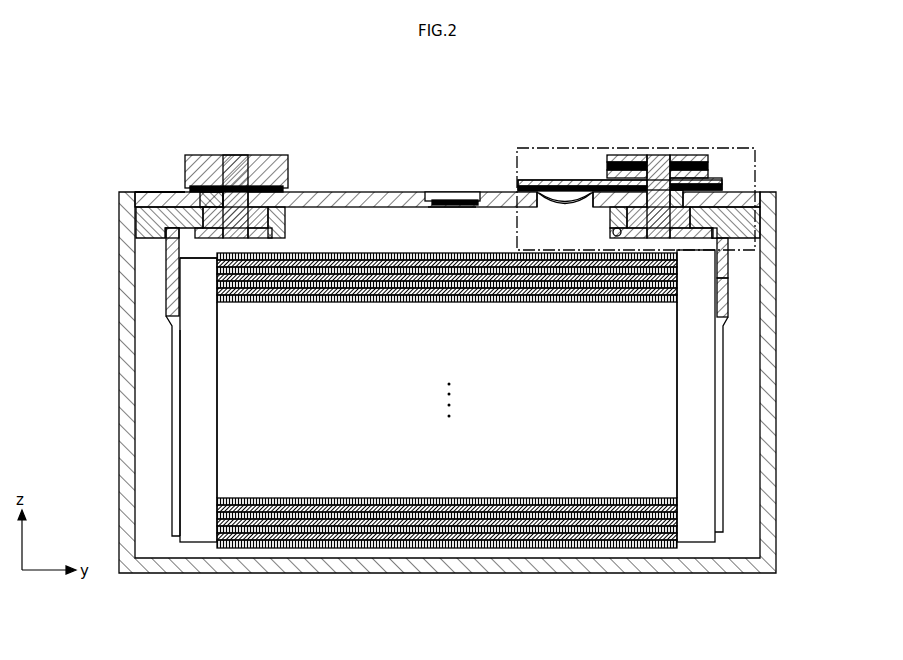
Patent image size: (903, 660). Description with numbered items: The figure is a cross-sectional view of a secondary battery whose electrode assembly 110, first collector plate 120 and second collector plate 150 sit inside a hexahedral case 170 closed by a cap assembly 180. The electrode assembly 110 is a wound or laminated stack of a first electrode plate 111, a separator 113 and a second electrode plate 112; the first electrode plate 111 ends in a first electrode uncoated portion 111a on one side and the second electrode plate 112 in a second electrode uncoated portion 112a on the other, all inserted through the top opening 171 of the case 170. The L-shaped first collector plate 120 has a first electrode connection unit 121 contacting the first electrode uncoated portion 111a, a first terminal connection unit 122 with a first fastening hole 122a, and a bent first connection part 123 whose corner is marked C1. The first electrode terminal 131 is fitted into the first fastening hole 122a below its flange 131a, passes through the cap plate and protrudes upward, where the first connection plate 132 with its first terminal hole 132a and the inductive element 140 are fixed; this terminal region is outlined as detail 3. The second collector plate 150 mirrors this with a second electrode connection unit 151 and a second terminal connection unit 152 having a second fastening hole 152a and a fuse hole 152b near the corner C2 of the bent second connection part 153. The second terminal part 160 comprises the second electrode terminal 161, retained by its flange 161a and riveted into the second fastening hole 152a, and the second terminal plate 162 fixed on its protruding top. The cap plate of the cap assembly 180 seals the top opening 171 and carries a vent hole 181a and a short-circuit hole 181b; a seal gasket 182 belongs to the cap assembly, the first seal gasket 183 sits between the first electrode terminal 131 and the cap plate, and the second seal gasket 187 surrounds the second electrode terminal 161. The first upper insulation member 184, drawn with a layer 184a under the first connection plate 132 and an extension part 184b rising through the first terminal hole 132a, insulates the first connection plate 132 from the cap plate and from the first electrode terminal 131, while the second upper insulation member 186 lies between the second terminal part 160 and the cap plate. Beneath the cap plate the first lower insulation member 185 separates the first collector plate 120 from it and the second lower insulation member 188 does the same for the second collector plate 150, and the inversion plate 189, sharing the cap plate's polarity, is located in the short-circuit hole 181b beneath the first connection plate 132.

The terminal region detail 3 is at (517, 150).
The electrode assembly 110 is at (449, 439).
The first electrode plate 111 is at (408, 550).
The first electrode uncoated portion 111a is at (697, 545).
The second electrode plate 112 is at (538, 550).
The second electrode uncoated portion 112a is at (198, 545).
The separator 113 is at (465, 550).
The first collector plate 120 is at (707, 354).
The first electrode connection unit 121 is at (724, 433).
The first terminal connection unit 122 is at (700, 197).
The first fastening hole 122a is at (718, 262).
The first connection part 123 is at (728, 298).
The first electrode terminal 131 is at (660, 175).
The flange 131a is at (614, 234).
The first connection plate 132 is at (528, 183).
The first terminal hole 132a is at (650, 178).
The inductive element 140 is at (670, 168).
The second collector plate 150 is at (157, 339).
The second electrode connection unit 151 is at (178, 433).
The second terminal connection unit 152 is at (172, 230).
The second fastening hole 152a is at (214, 263).
The fuse hole 152b is at (165, 193).
The second connection part 153 is at (170, 305).
The second terminal part 160 is at (270, 162).
The second electrode terminal 161 is at (238, 165).
The flange 161a is at (272, 222).
The second terminal plate 162 is at (206, 165).
The case 170 is at (780, 497).
The top opening 171 is at (138, 193).
The cap assembly 180 is at (333, 178).
The vent hole 181a is at (442, 208).
The short-circuit hole 181b is at (544, 208).
The seal gasket 182 is at (464, 195).
The first seal gasket 183 is at (687, 198).
The first upper insulation member 184 is at (722, 190).
The first insulating layer 184a is at (573, 187).
The extension part 184b is at (700, 182).
The first lower insulation member 185 is at (730, 216).
The second upper insulation member 186 is at (200, 187).
The second seal gasket 187 is at (210, 198).
The second lower insulation member 188 is at (145, 214).
The inversion plate 189 is at (564, 203).
The first coupling portion C1 is at (725, 222).
The corner C2 is at (160, 224).